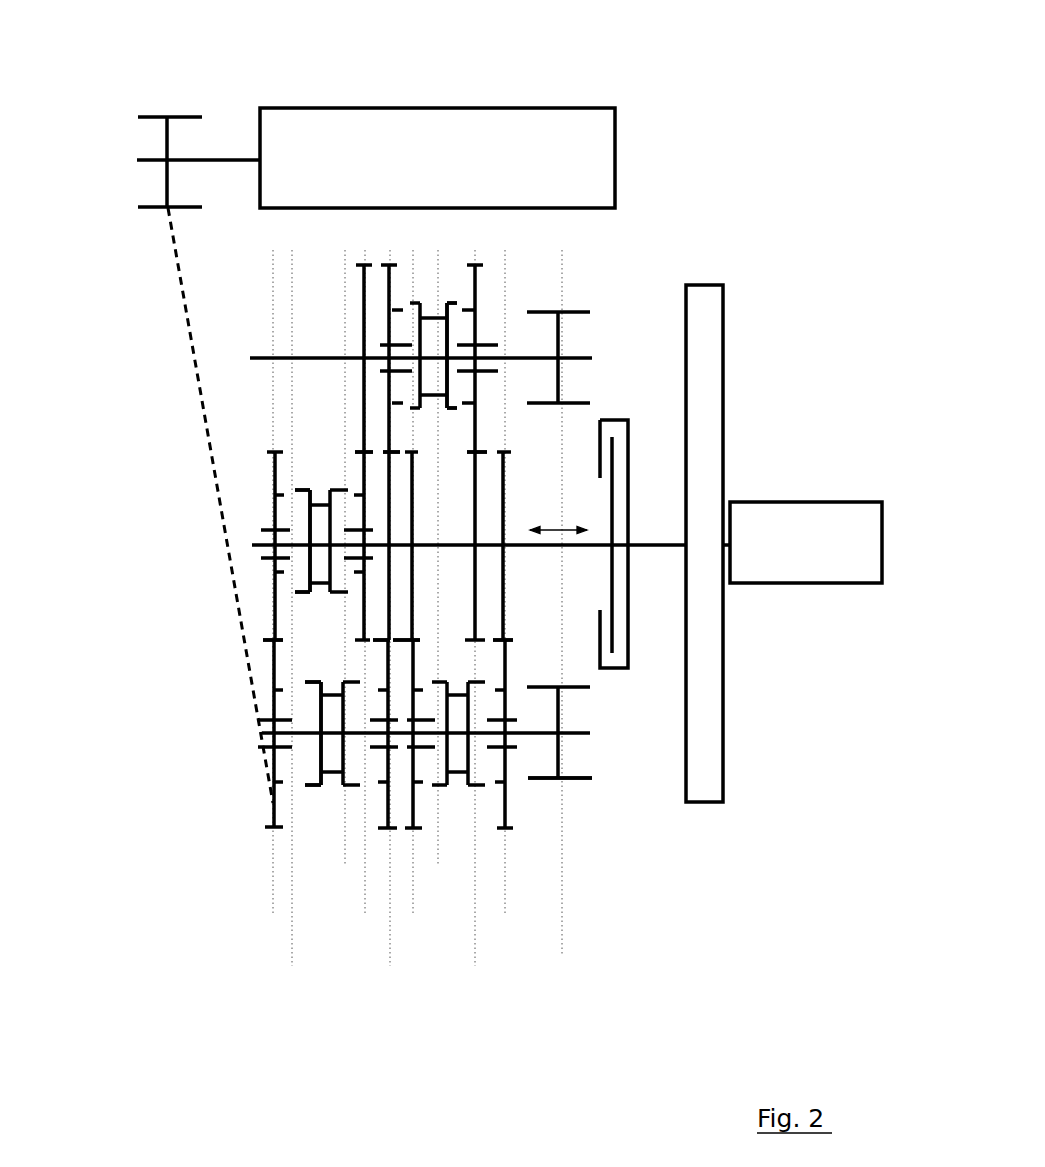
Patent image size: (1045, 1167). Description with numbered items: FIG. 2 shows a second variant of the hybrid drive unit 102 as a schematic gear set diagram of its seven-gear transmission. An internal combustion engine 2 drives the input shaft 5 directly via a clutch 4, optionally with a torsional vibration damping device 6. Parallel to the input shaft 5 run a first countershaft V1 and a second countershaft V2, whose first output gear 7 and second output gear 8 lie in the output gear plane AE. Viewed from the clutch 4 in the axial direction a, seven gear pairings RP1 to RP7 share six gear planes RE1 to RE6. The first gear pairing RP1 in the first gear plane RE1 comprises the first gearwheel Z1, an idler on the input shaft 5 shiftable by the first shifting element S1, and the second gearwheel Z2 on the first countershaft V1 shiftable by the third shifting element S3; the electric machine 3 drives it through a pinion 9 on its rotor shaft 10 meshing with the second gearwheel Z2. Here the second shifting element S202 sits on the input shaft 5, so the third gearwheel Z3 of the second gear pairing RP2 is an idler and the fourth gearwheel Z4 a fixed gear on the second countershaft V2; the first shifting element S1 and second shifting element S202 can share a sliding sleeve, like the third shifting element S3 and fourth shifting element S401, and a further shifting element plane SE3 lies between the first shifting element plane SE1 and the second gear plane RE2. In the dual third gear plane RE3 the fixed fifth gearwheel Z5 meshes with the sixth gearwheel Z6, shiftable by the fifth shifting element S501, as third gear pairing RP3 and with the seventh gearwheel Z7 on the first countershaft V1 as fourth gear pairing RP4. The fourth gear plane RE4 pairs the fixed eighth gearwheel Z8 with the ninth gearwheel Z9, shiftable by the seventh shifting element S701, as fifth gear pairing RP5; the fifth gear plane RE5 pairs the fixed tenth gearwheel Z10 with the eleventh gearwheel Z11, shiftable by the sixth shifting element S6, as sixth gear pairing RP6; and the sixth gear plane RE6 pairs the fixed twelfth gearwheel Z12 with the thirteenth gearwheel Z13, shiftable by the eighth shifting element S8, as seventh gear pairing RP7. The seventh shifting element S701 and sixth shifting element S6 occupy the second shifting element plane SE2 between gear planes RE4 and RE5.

The internal combustion engine 2 is at (842, 517).
The electric machine 3 is at (587, 128).
The clutch 4 is at (623, 505).
The input shaft 5 is at (255, 547).
The device for the absorption and/or damping of torsional vibrations 6 is at (710, 518).
The first output gear 7 is at (562, 711).
The second output gear 8 is at (560, 337).
The pinion 9 is at (165, 133).
The rotor shaft 10 is at (227, 158).
The hybrid drive unit 102 is at (735, 168).
The first gearwheel Z1 is at (273, 472).
The second gearwheel Z2 is at (358, 762).
The third gearwheel Z3 is at (347, 557).
The fourth gearwheel Z4 is at (363, 263).
The fifth gearwheel Z5 is at (387, 594).
The sixth gearwheel Z6 is at (390, 264).
The seventh gearwheel Z7 is at (413, 797).
The eighth gearwheel Z8 is at (410, 611).
The ninth gearwheel Z9 is at (432, 767).
The tenth gearwheel Z10 is at (477, 526).
The eleventh gearwheel Z11 is at (477, 290).
The twelfth gearwheel Z12 is at (505, 595).
The thirteenth gearwheel Z13 is at (490, 765).
The first shifting element S1 is at (295, 508).
The second shifting element S202 is at (343, 513).
The third shifting element S3 is at (302, 762).
The fourth shifting element S401 is at (340, 773).
The fifth shifting element S501 is at (403, 322).
The sixth shifting element S6 is at (462, 330).
The seventh shifting element S701 is at (485, 785).
The eighth shifting element S8 is at (543, 780).
The first gear pairing RP1 is at (273, 641).
The second gear pairing RP2 is at (362, 453).
The third gear pairing RP3 is at (386, 451).
The fourth gear pairing RP4 is at (387, 641).
The fifth gear pairing RP5 is at (411, 641).
The sixth gear pairing RP6 is at (483, 449).
The seventh gear pairing RP7 is at (512, 642).
The first shifting element plane SE1 is at (289, 628).
The second shifting element plane SE2 is at (444, 578).
The further shifting element plane SE3 is at (336, 578).
The first gear plane RE1 is at (259, 602).
The second gear plane RE2 is at (354, 602).
The third gear plane RE3 is at (389, 628).
The fourth gear plane RE4 is at (419, 602).
The fifth gear plane RE5 is at (474, 628).
The sixth gear plane RE6 is at (509, 602).
The output gear plane AE is at (561, 623).
The first countershaft V1 is at (585, 735).
The second countershaft V2 is at (594, 357).
The axial direction a is at (558, 517).